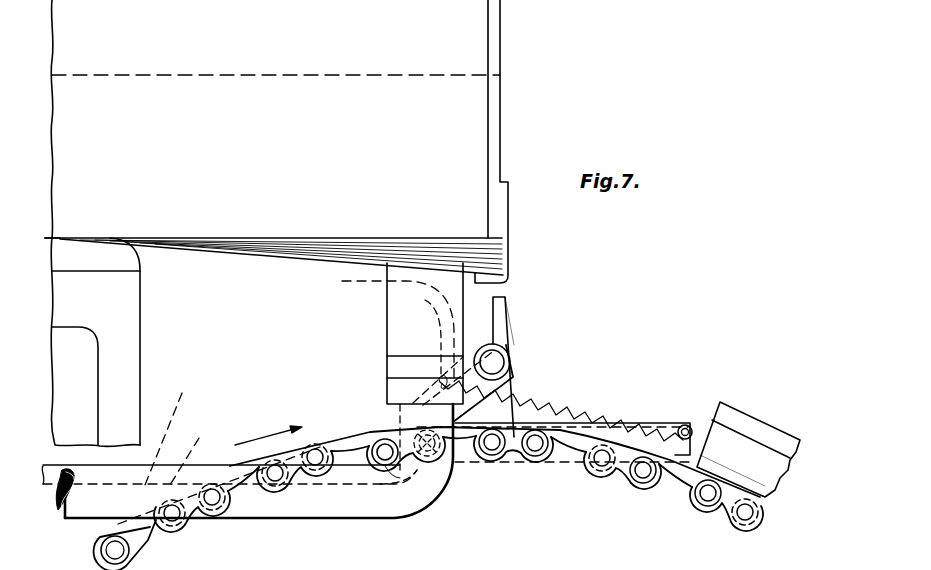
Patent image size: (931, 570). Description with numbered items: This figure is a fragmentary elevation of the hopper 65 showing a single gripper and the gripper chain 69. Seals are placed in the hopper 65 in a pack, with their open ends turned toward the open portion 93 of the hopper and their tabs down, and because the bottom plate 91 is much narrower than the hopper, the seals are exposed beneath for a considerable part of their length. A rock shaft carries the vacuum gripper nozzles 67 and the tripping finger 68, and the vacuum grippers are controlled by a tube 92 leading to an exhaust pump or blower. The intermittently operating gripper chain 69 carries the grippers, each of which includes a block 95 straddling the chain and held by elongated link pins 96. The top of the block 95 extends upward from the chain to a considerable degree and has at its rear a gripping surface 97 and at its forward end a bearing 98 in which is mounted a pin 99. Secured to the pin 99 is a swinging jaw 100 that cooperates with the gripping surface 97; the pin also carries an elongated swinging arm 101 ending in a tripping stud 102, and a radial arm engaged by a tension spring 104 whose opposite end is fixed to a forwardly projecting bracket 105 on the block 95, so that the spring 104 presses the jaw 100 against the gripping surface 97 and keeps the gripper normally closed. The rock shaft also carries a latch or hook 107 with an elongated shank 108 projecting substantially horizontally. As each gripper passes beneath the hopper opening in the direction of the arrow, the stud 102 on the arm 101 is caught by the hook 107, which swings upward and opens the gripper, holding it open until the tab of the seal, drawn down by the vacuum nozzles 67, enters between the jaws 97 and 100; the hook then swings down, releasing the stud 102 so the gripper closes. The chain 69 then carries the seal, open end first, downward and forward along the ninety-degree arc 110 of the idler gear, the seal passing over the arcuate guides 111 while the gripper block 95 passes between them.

The hopper 65 is at (279, 141).
The open portion of the hopper 93 is at (413, 248).
The bottom plate 91 is at (91, 262).
The vacuum gripper nozzles 67 is at (379, 325).
The gripping surface 97 is at (437, 373).
The bearing 98 is at (507, 357).
The swinging jaw 100 is at (505, 318).
The pin 99 is at (503, 363).
The block 95 is at (507, 403).
The tension spring 104 is at (593, 413).
The bracket 105 is at (692, 425).
The link pins 96 is at (457, 471).
The tube 92 is at (380, 505).
The shank 108 is at (169, 428).
The tripping finger 68 is at (219, 471).
The gripper chain 69 is at (632, 490).
The swinging arm 101 is at (388, 448).
The tripping stud 102 is at (380, 435).
The hook 107 is at (397, 477).
The 90° arc 110 is at (770, 423).
The arcuate guides 111 is at (732, 465).